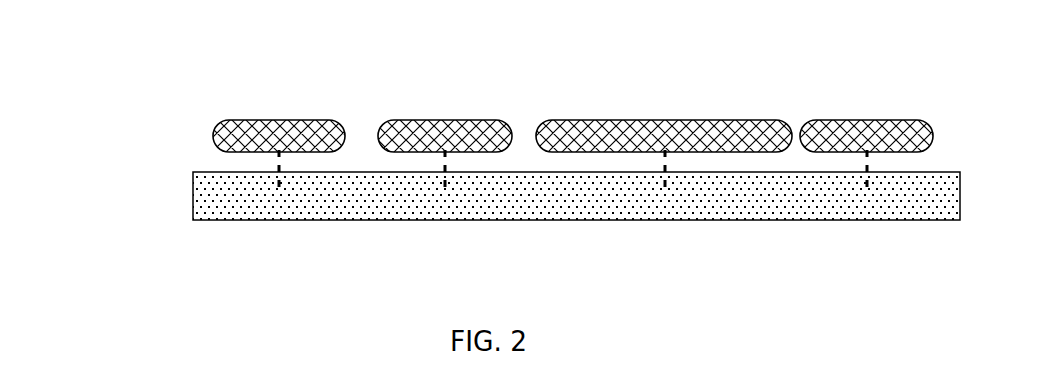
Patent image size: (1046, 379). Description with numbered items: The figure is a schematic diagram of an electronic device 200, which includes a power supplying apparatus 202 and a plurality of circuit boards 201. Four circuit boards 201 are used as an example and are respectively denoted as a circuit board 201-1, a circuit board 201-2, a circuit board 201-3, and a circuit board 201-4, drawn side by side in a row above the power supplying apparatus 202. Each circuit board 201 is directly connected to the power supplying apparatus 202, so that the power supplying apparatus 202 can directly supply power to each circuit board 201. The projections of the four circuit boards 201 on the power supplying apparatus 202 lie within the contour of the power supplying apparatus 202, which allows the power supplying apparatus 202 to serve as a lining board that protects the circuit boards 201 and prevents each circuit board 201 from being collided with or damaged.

The electronic device 200 is at (80, 44).
The circuit board 201 is at (573, 109).
The circuit board 201-1 is at (279, 109).
The circuit board 201-2 is at (446, 109).
The circuit board 201-3 is at (664, 109).
The circuit board 201-4 is at (866, 109).
The power supplying apparatus 202 is at (503, 189).